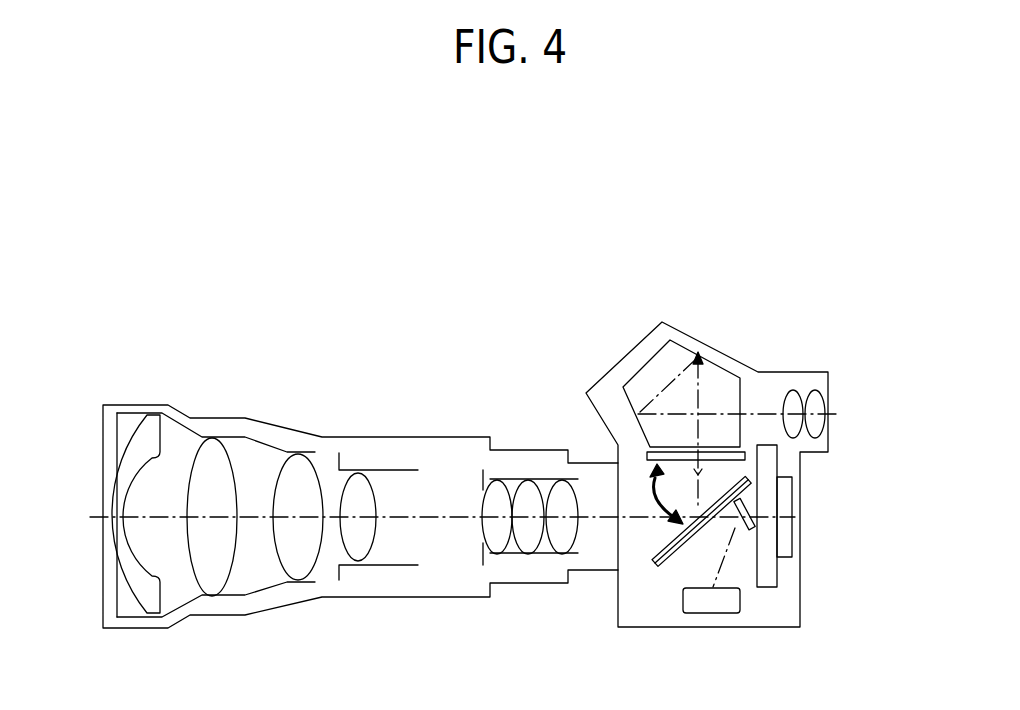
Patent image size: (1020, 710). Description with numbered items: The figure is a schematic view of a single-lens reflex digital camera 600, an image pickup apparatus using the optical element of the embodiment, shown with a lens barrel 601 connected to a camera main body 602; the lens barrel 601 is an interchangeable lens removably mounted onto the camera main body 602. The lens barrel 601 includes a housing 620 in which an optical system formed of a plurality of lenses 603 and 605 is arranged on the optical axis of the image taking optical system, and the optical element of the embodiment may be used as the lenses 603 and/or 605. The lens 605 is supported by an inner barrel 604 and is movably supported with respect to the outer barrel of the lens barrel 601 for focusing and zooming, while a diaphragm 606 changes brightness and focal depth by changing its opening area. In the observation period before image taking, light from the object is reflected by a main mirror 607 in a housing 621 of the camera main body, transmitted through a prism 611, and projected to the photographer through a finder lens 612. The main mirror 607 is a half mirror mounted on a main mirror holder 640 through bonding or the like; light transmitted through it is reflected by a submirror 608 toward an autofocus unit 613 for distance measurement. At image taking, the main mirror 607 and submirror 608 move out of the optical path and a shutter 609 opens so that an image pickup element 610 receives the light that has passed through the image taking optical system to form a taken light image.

The single-lens reflex digital camera 600 is at (573, 191).
The lens barrel 601 is at (593, 282).
The camera main body 602 is at (840, 283).
The lens 603 is at (143, 430).
The housing 620 is at (278, 428).
The inner barrel 604 is at (375, 468).
The lens 605 is at (358, 552).
The diaphragm 606 is at (475, 477).
The housing 621 is at (615, 362).
The prism 611 is at (715, 377).
The finder lens 612 is at (817, 387).
The main mirror 607 is at (653, 567).
The main mirror holder 640 is at (663, 572).
The submirror 608 is at (747, 528).
The autofocus (AF) unit 613 is at (720, 613).
The shutter 609 is at (768, 577).
The image pickup element 610 is at (787, 545).